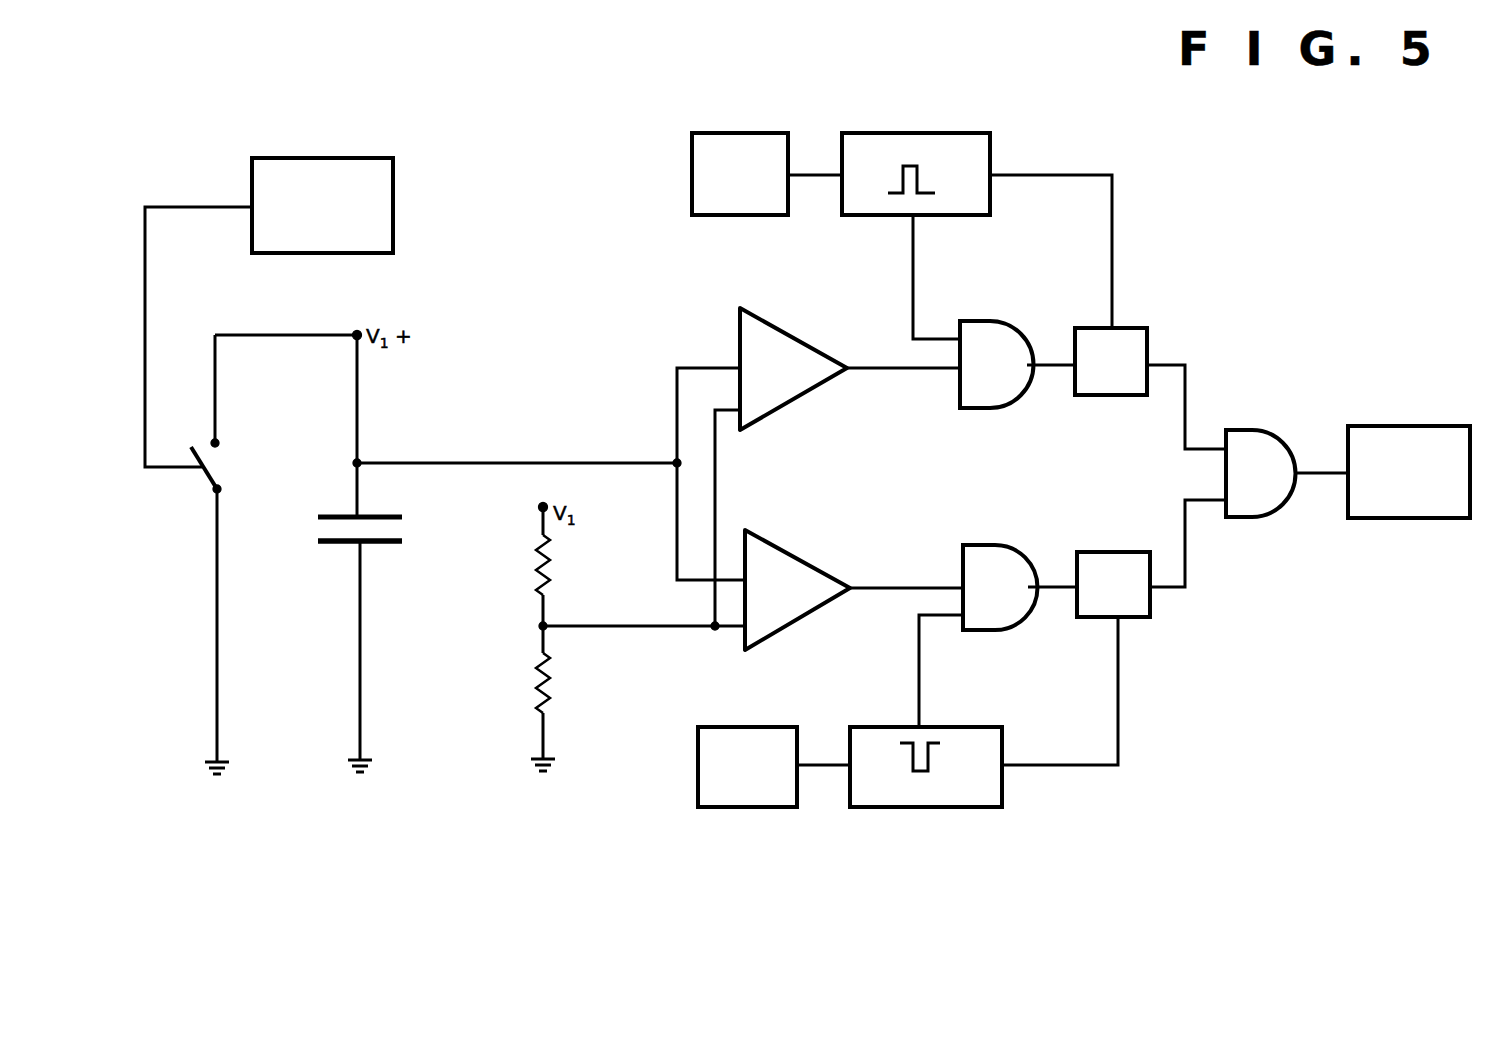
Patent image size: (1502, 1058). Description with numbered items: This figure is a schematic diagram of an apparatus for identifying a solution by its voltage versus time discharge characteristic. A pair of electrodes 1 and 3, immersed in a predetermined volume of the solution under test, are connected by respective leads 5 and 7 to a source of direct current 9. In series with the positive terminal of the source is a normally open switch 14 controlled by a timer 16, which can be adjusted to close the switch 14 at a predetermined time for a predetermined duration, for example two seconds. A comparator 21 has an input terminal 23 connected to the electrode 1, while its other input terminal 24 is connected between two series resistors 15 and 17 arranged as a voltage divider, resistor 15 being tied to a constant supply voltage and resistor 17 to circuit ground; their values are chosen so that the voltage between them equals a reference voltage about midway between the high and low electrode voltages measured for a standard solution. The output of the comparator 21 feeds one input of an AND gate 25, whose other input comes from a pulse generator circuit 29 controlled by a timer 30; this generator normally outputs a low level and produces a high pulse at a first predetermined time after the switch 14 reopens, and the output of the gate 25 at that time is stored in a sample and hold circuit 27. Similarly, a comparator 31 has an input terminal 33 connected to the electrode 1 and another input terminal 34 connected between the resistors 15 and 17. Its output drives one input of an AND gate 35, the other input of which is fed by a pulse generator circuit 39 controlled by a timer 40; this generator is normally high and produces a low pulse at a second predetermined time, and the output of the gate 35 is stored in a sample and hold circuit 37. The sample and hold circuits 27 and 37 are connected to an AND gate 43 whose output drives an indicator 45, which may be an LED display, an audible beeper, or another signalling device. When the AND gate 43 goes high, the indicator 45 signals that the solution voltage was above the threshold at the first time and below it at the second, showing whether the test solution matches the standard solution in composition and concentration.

The electrode 1 is at (335, 515).
The electrode 3 is at (362, 545).
The lead 5 is at (213, 400).
The lead 7 is at (362, 722).
The source of direct current 9 is at (355, 338).
The normally open switch 14 is at (204, 477).
The resistor 15 is at (538, 560).
The timer 16 is at (325, 157).
The resistor 17 is at (540, 665).
The comparator 21 is at (800, 340).
The input terminal 23 is at (738, 366).
The input terminal 24 is at (740, 432).
The AND gate 25 is at (1022, 283).
The sample and hold circuit 27 is at (1125, 328).
The pulse generator circuit 29 is at (955, 100).
The timer 30 is at (760, 132).
The comparator 31 is at (812, 562).
The input terminal 33 is at (742, 575).
The input terminal 34 is at (740, 628).
The AND gate 35 is at (1030, 503).
The sample and hold circuit 37 is at (1110, 552).
The pulse generator circuit 39 is at (967, 808).
The timer 40 is at (773, 808).
The AND gate 43 is at (1298, 385).
The indicator 45 is at (1383, 426).